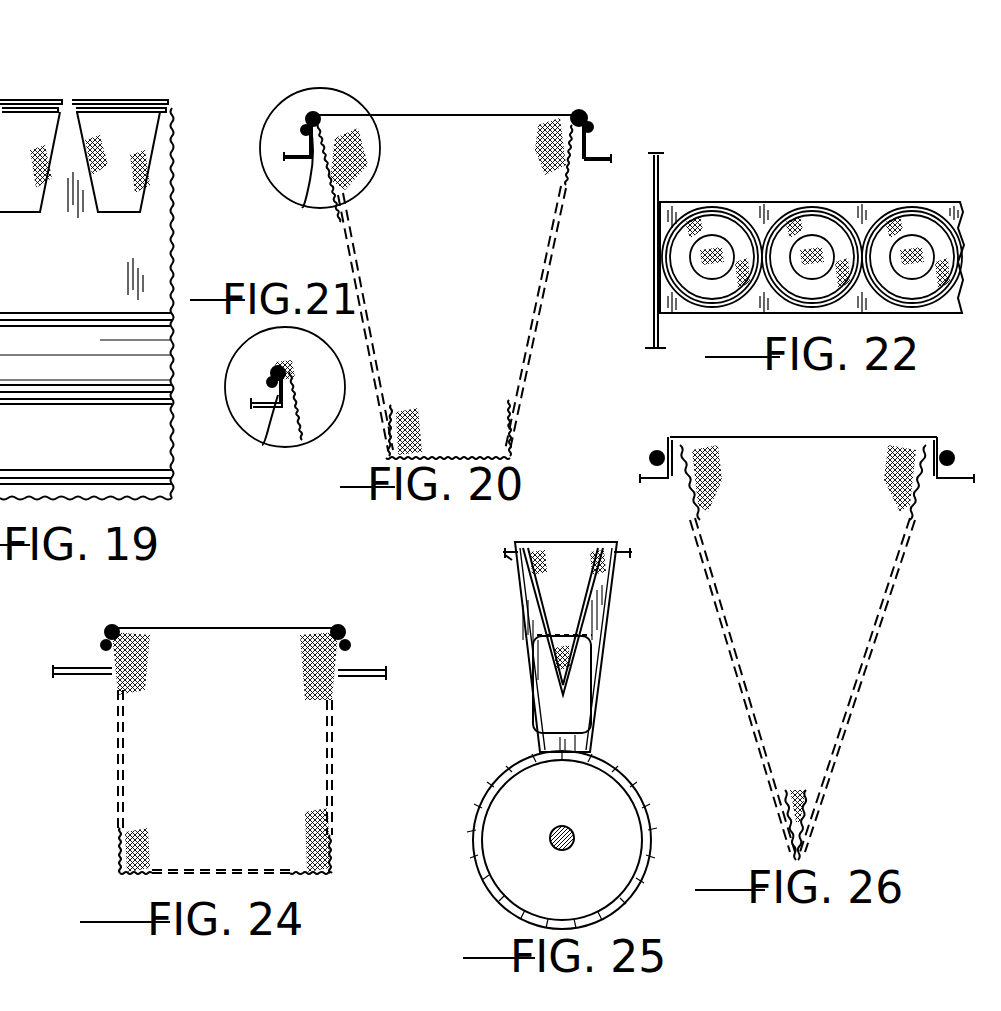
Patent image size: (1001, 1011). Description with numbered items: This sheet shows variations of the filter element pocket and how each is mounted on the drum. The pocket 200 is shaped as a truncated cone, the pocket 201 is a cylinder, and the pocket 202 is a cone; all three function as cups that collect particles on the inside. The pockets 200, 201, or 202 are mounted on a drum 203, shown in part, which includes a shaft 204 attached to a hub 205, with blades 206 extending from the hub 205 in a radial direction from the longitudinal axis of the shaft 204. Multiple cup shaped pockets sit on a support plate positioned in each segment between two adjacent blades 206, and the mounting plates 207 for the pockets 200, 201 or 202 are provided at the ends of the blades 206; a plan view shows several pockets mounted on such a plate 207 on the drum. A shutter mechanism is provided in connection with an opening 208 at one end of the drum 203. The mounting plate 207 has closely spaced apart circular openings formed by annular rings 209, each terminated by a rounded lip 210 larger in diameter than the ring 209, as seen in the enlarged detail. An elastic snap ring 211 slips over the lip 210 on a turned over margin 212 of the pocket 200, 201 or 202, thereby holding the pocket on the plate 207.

In FIG. 20, the pocket 200 is at (562, 185).
In FIG. 24, the pocket 201 is at (332, 820).
In FIG. 25, the pocket 202 is at (592, 615).
In FIG. 26, the pocket 202 is at (885, 648).
In FIG. 25, the drum 203 is at (650, 784).
In FIG. 19, the shaft 204 is at (0, 380).
In FIG. 25, the shaft 204 is at (562, 826).
In FIG. 19, the hub 205 is at (0, 290).
In FIG. 25, the hub 205 is at (648, 867).
In FIG. 19, the blades 206 is at (68, 160).
In FIG. 25, the blades 206 is at (532, 682).
In FIG. 20, the mounting plate 207 is at (291, 150).
In FIG. 21, the mounting plate 207 is at (268, 404).
In FIG. 22, the mounting plate 207 is at (760, 215).
In FIG. 24, the mounting plate 207 is at (70, 668).
In FIG. 25, the mounting plate 207 is at (508, 552).
In FIG. 26, the mounting plate 207 is at (640, 478).
In FIG. 25, the opening 208 is at (565, 712).
In FIG. 20, the annular ring 209 is at (310, 200).
In FIG. 21, the annular ring 209 is at (300, 445).
In FIG. 20, the rounded lip 210 is at (322, 130).
In FIG. 21, the rounded lip 210 is at (288, 372).
In FIG. 20, the elastic snap ring 211 is at (310, 118).
In FIG. 21, the elastic snap ring 211 is at (270, 372).
In FIG. 24, the elastic snap ring 211 is at (105, 632).
In FIG. 26, the elastic snap ring 211 is at (655, 452).
In FIG. 21, the turned over margin 212 is at (268, 442).